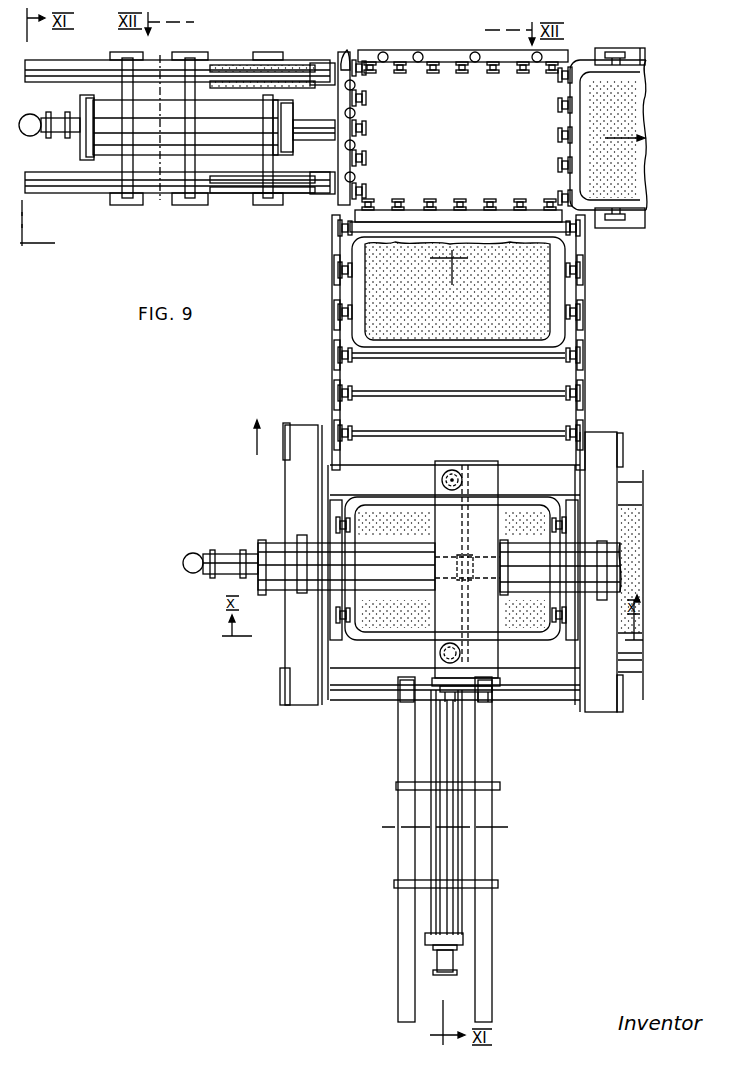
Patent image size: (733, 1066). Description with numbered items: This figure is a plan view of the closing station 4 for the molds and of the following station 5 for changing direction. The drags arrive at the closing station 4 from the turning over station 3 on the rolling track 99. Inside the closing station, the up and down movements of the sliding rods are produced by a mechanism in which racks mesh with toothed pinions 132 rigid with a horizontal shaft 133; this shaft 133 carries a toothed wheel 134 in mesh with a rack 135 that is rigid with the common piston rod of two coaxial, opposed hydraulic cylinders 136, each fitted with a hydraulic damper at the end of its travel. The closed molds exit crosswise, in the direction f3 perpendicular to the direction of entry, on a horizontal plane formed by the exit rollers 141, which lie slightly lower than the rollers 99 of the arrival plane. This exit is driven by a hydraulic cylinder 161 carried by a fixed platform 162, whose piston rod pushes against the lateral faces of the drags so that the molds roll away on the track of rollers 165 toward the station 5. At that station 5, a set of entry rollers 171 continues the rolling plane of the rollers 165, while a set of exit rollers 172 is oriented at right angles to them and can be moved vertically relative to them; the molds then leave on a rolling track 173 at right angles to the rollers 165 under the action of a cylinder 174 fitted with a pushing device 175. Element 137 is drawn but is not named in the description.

The turning over station 3 is at (238, 441).
The closing station 4 is at (312, 711).
The station for changing direction 5 is at (336, 61).
The rolling track 99 is at (625, 655).
The toothed pinions 132 is at (470, 650).
The horizontal shaft 133 is at (465, 604).
The toothed wheel 134 is at (474, 554).
The rack 135 is at (447, 553).
The hydraulic cylinders 136 is at (280, 582).
The hand wheel 137 is at (232, 548).
The exit rollers 141 is at (340, 632).
The hydraulic cylinder 161 is at (447, 805).
The fixed platform 162 is at (490, 806).
The rollers 165 is at (340, 335).
The entry rollers 171 is at (360, 156).
The exit rollers 172 is at (493, 72).
The rolling track 173 is at (628, 56).
The cylinder 174 is at (243, 149).
The pushing device 175 is at (357, 107).